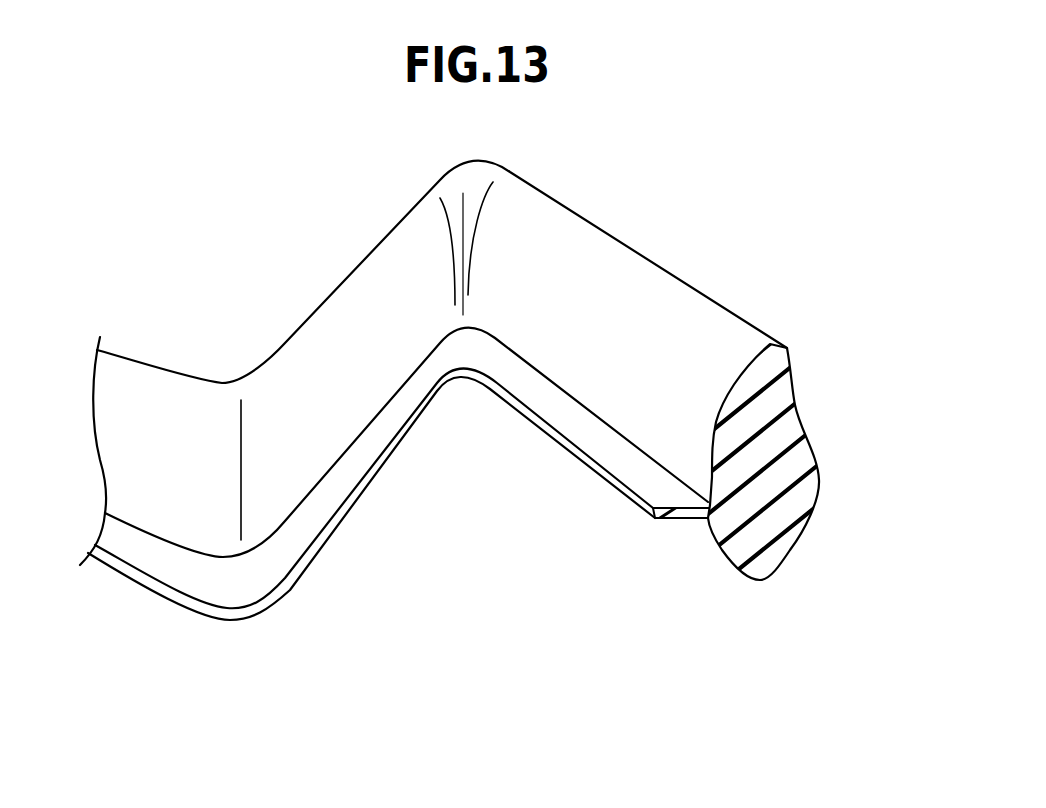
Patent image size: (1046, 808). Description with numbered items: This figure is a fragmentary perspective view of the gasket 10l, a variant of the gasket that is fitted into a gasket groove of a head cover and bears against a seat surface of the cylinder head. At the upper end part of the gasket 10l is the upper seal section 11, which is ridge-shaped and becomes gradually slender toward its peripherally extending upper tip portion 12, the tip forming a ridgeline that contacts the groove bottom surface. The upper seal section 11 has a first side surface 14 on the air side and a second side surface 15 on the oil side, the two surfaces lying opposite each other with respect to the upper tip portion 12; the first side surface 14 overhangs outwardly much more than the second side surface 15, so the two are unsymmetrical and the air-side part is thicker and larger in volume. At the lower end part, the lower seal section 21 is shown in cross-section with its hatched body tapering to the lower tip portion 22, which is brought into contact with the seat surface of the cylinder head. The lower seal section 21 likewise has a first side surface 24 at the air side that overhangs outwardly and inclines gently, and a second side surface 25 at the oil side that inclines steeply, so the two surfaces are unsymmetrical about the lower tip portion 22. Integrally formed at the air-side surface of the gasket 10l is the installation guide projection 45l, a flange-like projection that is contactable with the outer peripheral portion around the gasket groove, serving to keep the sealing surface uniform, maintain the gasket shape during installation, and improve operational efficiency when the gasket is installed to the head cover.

The gasket 10l is at (363, 515).
The upper seal section 11 is at (773, 353).
The upper tip portion 12 is at (708, 296).
The first side surface 14 is at (637, 272).
The second side surface 15 is at (795, 378).
The lower seal section 21 is at (747, 570).
The lower tip portion 22 is at (768, 580).
The first side surface 24 is at (717, 540).
The second side surface 25 is at (782, 557).
The installation guide projection 45l is at (620, 455).